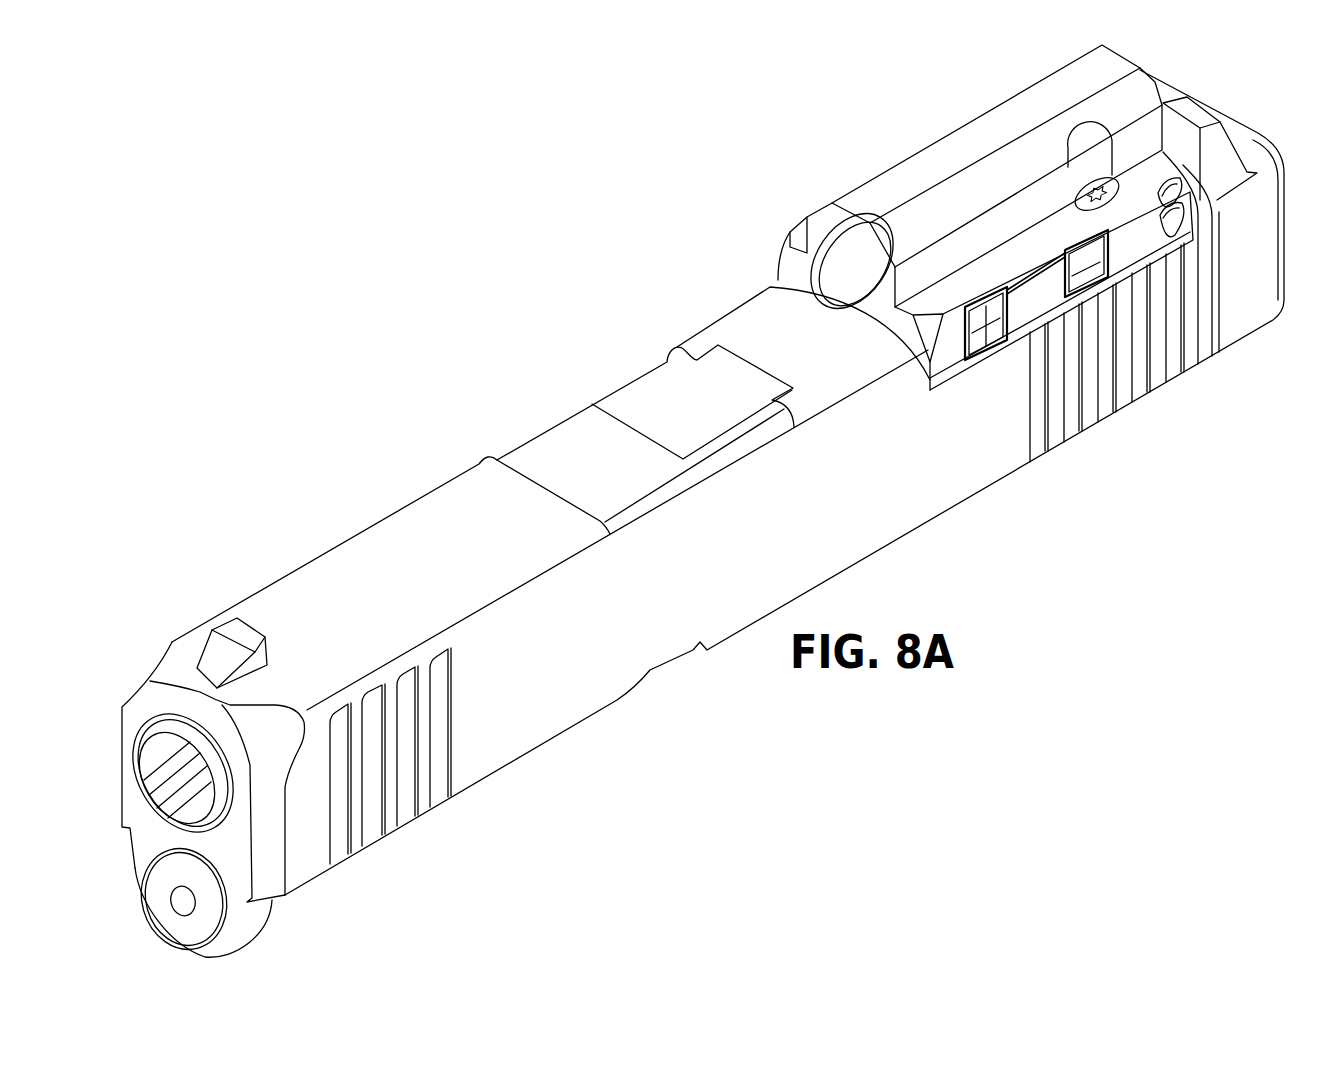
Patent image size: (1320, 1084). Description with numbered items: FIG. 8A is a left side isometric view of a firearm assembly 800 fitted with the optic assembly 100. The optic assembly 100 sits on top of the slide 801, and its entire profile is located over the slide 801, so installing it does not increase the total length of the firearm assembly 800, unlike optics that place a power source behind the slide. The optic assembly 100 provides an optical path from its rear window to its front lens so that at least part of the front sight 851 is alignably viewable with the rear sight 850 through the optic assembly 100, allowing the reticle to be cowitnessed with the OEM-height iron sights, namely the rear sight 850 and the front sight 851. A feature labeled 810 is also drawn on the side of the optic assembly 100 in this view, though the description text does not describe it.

The optic assembly 100 is at (955, 110).
The firearm assembly 800 is at (550, 190).
The slide 801 is at (440, 477).
The adjustment buttons 810 is at (992, 366).
The rear sight 850 is at (1236, 129).
The front sight 851 is at (223, 628).